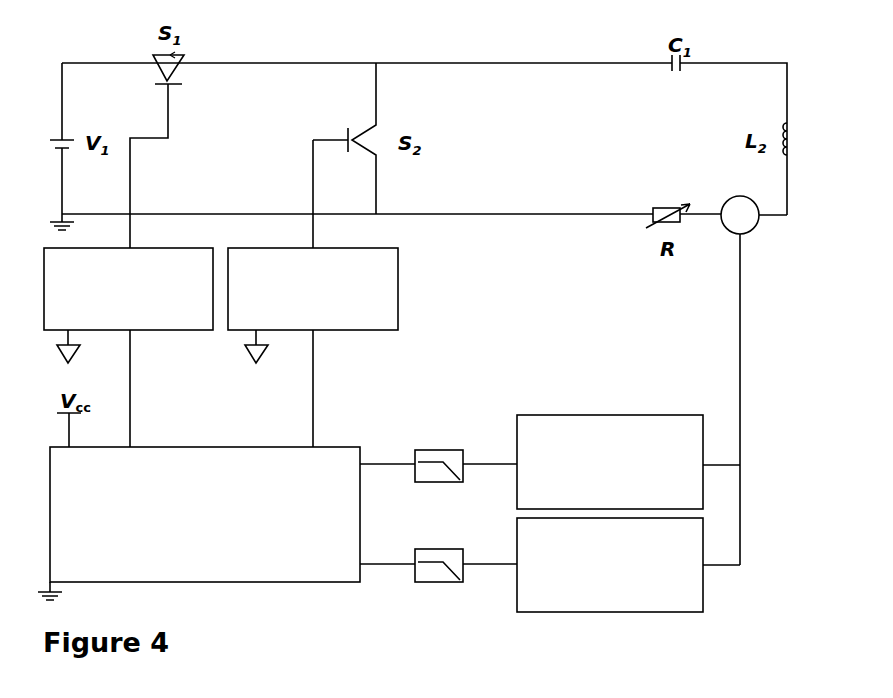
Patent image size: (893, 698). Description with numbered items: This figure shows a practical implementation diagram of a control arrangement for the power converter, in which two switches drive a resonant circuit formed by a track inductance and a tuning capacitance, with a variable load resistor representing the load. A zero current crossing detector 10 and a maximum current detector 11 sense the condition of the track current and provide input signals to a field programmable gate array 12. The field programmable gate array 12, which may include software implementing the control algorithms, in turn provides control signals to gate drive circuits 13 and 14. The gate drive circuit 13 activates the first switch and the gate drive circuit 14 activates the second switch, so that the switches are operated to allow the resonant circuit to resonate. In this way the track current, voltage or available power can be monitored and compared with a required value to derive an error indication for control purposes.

The zero current crossing detector 10 is at (590, 422).
The maximum current detector 11 is at (683, 600).
The field programmable gate array 12 is at (200, 457).
The gate drive circuit 13 is at (157, 323).
The gate drive circuit 14 is at (342, 320).